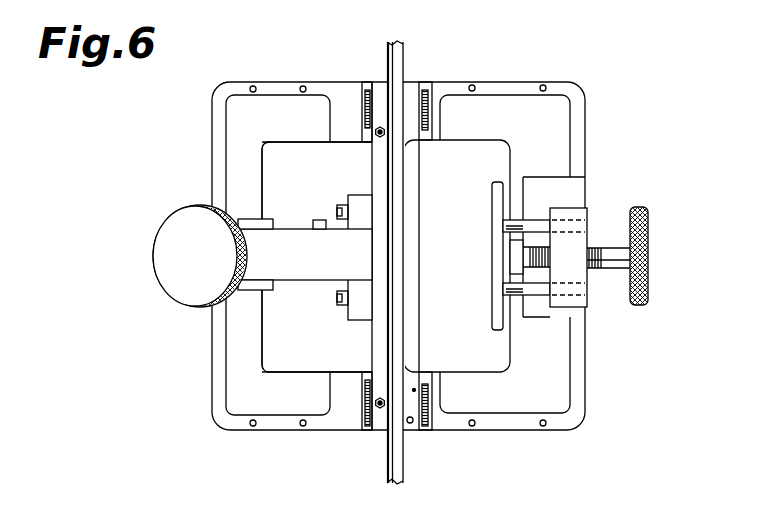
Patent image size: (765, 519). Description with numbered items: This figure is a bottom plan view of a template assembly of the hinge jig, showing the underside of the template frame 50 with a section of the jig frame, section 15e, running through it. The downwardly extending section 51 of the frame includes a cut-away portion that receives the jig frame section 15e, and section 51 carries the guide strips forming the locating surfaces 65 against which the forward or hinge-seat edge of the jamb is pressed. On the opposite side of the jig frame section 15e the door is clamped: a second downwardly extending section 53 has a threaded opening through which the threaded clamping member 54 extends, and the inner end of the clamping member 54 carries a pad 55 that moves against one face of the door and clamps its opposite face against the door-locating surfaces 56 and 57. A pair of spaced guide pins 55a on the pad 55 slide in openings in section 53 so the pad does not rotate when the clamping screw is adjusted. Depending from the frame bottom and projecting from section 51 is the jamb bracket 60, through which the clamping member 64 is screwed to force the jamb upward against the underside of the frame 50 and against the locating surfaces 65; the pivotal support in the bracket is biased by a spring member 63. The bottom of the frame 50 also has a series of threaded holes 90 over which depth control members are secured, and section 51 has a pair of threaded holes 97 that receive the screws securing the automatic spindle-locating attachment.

The template frame 50 is at (578, 100).
The downwardly extending section 51 is at (373, 338).
The second downwardly extending section 53 is at (588, 305).
The threaded clamping member 54 is at (649, 242).
The pad 55 is at (497, 306).
The guide pins 55a is at (536, 222).
The door-locating surface 56 is at (431, 81).
The door-locating surface 57 is at (433, 430).
The jamb bracket 60 is at (306, 267).
The spring member 63 is at (300, 227).
The clamping member 64 is at (157, 257).
The locating surfaces 65 is at (365, 81).
The threaded holes 90 is at (302, 86).
The threaded holes 97 is at (376, 137).
The jig frame section 15e is at (398, 471).